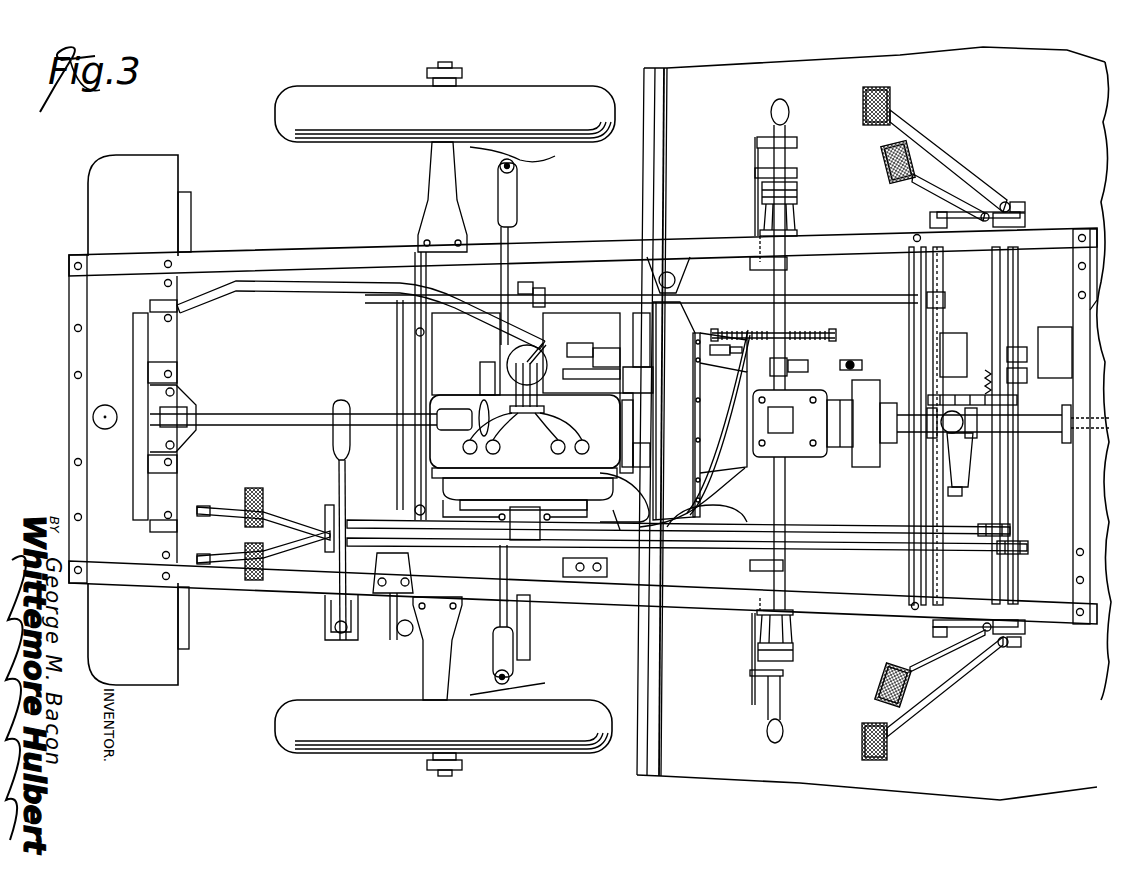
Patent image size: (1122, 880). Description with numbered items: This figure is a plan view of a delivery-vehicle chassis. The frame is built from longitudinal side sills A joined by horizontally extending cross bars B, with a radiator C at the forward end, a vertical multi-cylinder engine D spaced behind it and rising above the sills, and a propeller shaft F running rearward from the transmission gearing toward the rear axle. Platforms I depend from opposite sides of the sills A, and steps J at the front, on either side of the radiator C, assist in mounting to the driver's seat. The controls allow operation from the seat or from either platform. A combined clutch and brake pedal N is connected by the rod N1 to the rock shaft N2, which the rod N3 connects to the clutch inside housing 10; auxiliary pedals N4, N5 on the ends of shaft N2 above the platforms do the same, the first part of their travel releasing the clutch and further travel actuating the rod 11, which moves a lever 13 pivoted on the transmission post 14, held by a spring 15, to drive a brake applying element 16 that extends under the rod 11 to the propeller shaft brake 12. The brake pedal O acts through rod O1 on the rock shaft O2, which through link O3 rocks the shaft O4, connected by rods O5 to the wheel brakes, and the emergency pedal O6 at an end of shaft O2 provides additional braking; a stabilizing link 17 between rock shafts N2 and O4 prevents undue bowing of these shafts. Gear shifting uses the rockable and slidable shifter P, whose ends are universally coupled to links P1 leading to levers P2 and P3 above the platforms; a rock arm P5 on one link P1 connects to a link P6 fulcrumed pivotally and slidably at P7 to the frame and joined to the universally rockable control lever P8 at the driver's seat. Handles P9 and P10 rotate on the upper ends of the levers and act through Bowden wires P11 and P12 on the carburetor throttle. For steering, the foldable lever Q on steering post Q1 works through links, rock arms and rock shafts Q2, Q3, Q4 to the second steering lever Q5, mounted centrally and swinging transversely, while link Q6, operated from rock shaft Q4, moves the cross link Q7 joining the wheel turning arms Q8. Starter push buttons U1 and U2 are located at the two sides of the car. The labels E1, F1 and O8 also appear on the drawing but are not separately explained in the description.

The side sills A is at (326, 252).
The cross bars B is at (914, 274).
The radiator C is at (90, 442).
The explosion engine D is at (531, 426).
The clutch housing E1 is at (740, 432).
The propeller shaft F is at (1098, 434).
The shaft flange F1 is at (1040, 434).
The platforms I is at (733, 68).
The steps J is at (138, 168).
The combined clutch and brake operating pedal N is at (240, 552).
The rod N1 is at (830, 556).
The rock shaft N2 is at (1020, 490).
The rod N3 is at (812, 360).
The auxiliary operating pedal N4 is at (860, 742).
The auxiliary operating pedal N5 is at (864, 106).
The brake operating pedal O is at (244, 490).
The rod O1 is at (820, 526).
The rock shaft O2 is at (996, 512).
The link O3 is at (1014, 400).
The rock shaft O4 is at (932, 322).
The rods O5 is at (1044, 204).
The auxiliary operating pedal O6 is at (880, 684).
The clutch pedal pad O8 is at (886, 164).
The gear shifter P is at (790, 380).
The links P1 is at (786, 265).
The lever P2 is at (768, 733).
The lever P3 is at (790, 112).
The rock arm P5 is at (785, 566).
The link P6 is at (696, 598).
The fulcrum P7 is at (580, 578).
The control lever P8 is at (374, 632).
The handle portion P9 is at (778, 742).
The handle portion P10 is at (770, 114).
The Bowden wire P11 is at (753, 650).
The Bowden wire P12 is at (756, 206).
The foldable operating lever Q is at (331, 474).
The steering post Q1 is at (336, 641).
The link Q2 is at (396, 363).
The rock arm Q3 is at (379, 306).
The rock shaft Q4 is at (606, 302).
The second steering control lever Q5 is at (942, 434).
The link Q6 is at (530, 282).
The cross link Q7 is at (508, 220).
The wheel turning arms Q8 is at (522, 421).
The starter switch U1 is at (837, 252).
The starter switch U2 is at (846, 584).
The clutch housing 10 is at (722, 464).
The rod 11 is at (990, 384).
The brake 12 is at (870, 466).
The lever 13 is at (822, 375).
The transmission post 14 is at (790, 423).
The spring 15 is at (830, 348).
The brake applying element 16 is at (864, 366).
The stabilizing link 17 is at (1013, 384).